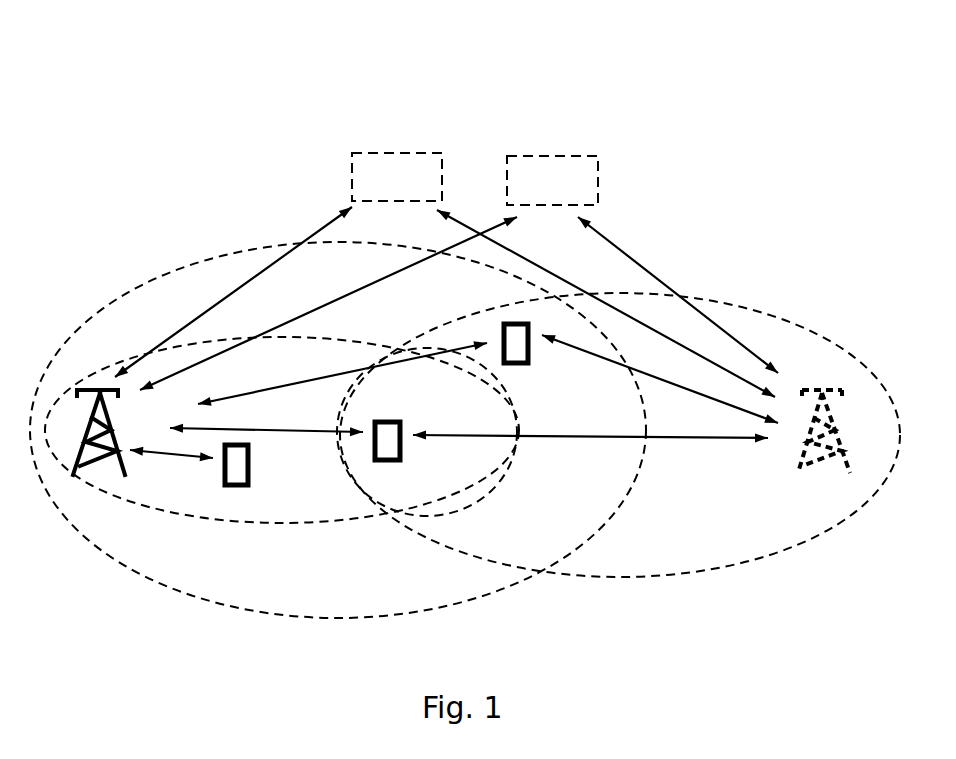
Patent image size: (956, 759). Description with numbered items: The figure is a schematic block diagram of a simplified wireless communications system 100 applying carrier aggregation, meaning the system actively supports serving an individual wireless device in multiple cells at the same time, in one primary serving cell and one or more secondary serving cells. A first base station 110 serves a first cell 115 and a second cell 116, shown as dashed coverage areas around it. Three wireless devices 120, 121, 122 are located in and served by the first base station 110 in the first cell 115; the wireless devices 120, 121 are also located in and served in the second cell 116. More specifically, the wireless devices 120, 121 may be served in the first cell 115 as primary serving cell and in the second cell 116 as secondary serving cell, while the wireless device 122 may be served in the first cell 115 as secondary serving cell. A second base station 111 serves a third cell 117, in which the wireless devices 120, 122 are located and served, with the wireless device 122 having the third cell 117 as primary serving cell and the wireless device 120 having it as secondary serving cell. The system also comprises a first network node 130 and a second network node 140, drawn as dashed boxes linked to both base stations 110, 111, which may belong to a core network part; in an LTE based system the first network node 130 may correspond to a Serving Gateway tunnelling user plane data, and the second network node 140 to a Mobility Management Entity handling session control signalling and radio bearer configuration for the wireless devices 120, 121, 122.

The wireless communications system 100 is at (170, 82).
The first base station 110 is at (118, 445).
The second base station 111 is at (800, 462).
The first cell 115 is at (233, 606).
The second cell 116 is at (205, 343).
The third cell 117 is at (660, 571).
The wireless device 120 is at (403, 425).
The wireless device 121 is at (222, 480).
The wireless device 122 is at (530, 348).
The first network node 130 is at (352, 158).
The second network node 140 is at (598, 192).